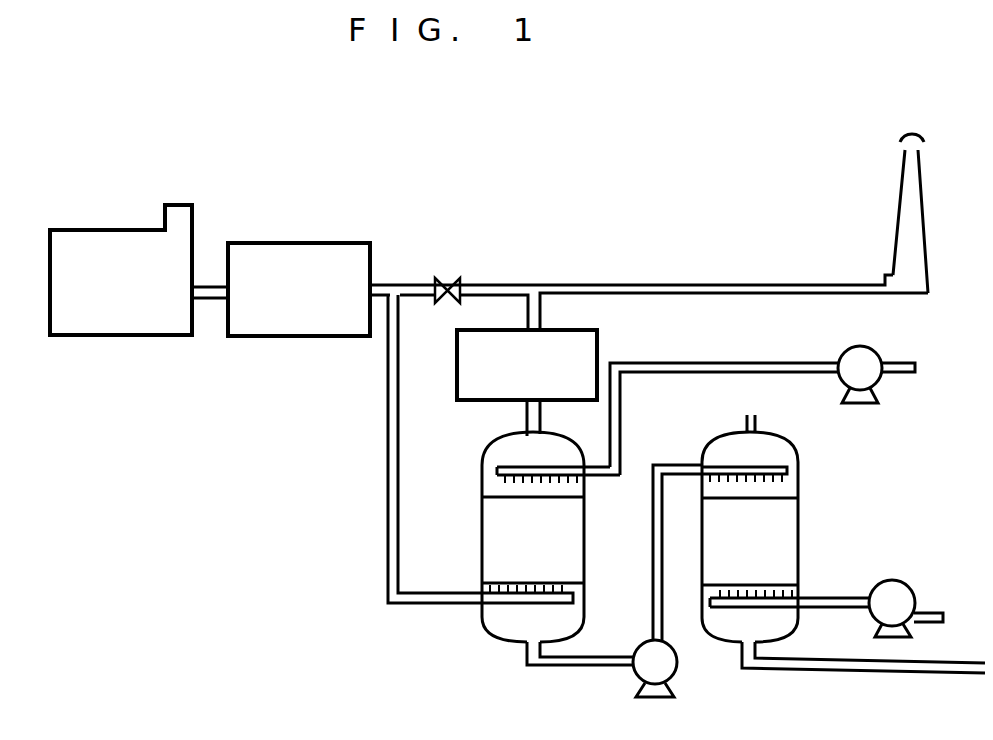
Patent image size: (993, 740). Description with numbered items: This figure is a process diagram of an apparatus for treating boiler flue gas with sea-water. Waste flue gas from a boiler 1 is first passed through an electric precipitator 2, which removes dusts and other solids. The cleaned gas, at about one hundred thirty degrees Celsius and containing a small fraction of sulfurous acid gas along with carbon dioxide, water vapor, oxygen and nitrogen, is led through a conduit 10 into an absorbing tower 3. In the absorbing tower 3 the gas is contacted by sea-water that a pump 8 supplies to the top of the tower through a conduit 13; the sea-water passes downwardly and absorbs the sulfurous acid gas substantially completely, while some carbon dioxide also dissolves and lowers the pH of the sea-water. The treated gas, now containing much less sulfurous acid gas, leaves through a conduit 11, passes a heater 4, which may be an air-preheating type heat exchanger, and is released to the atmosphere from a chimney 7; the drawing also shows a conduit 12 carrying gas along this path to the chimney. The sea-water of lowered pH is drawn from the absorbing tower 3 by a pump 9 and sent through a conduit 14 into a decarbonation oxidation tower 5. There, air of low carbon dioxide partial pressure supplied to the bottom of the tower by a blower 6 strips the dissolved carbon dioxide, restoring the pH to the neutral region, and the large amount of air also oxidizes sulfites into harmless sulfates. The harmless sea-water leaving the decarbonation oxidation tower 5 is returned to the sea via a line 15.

The boiler 1 is at (103, 229).
The electric precipitator 2 is at (288, 243).
The absorbing tower 3 is at (483, 459).
The heater 4 is at (597, 341).
The decarbonation oxidation tower 5 is at (800, 479).
The blower 6 is at (903, 586).
The chimney 7 is at (893, 241).
The pump 8 is at (877, 351).
The pump 9 is at (646, 643).
The conduit 10 is at (388, 523).
The conduit 11 is at (541, 417).
The stack conduit 12 is at (756, 283).
The conduit 13 is at (688, 363).
The conduit 14 is at (652, 535).
The line 15 is at (828, 674).